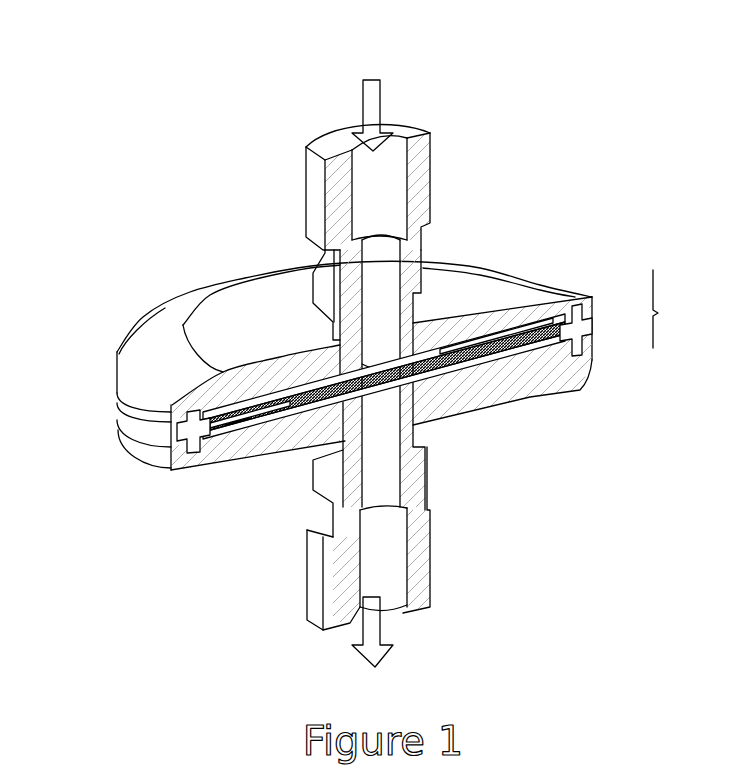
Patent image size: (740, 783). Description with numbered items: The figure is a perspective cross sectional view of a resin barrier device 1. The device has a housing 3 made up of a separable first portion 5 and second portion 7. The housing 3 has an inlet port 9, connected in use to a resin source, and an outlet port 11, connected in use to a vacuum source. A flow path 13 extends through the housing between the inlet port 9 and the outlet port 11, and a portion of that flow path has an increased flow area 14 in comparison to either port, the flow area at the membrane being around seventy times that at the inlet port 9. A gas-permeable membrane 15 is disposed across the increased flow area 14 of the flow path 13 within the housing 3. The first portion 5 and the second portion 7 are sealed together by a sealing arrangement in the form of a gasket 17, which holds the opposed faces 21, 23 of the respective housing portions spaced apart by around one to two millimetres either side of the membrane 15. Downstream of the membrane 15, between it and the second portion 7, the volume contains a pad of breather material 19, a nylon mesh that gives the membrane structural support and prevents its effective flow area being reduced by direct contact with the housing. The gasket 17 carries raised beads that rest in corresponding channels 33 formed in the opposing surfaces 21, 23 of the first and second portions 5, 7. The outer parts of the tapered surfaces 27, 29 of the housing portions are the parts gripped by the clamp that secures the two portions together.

The resin barrier device 1 is at (147, 150).
The housing 3 is at (666, 309).
The first portion 5 is at (511, 321).
The second portion 7 is at (505, 388).
The inlet port 9 is at (414, 177).
The outlet port 11 is at (318, 626).
The flow path 13 is at (373, 80).
The increased flow area 14 is at (418, 390).
The gas-permeable membrane 15 is at (166, 434).
The gasket 17 is at (117, 410).
The pad of breather material 19 is at (248, 430).
The opposed face 21 is at (285, 402).
The opposed face 23 is at (268, 442).
The tapered surface 27 is at (140, 360).
The tapered surface 29 is at (555, 293).
The channels 33 is at (592, 310).